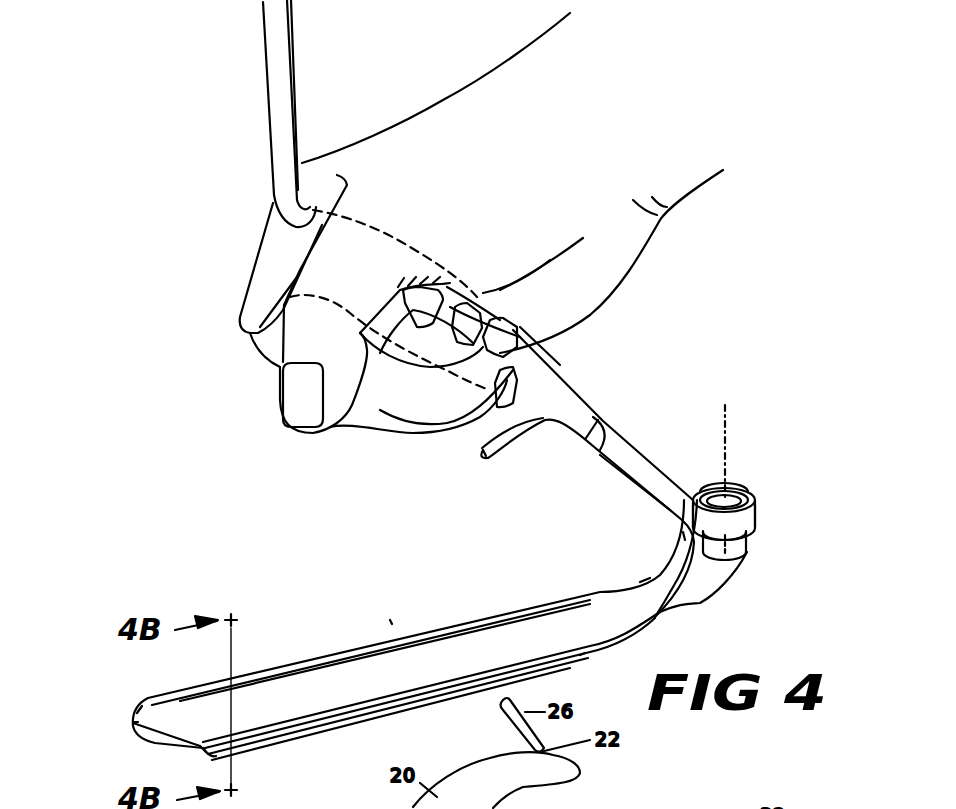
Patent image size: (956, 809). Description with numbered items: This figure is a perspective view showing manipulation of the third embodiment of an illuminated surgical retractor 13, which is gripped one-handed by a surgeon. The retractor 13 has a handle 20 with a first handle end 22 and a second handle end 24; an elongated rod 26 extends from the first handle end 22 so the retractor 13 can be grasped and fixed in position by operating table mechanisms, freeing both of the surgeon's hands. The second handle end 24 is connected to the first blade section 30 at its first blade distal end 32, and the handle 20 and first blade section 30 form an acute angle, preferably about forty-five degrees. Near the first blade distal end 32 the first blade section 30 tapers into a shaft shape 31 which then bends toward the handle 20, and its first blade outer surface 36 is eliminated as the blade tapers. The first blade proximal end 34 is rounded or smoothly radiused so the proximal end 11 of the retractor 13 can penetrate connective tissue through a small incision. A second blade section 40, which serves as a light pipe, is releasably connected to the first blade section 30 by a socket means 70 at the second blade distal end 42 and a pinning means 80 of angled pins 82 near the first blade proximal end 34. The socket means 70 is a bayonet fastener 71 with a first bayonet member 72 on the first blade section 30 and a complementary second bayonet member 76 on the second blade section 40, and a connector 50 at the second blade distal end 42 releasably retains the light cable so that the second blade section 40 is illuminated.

The proximal end of the retractor 11 is at (133, 722).
The illuminated surgical retractor 13 is at (548, 392).
The handle 20 is at (525, 360).
The first handle end 22 is at (298, 231).
The second handle end 24 is at (606, 427).
The elongated rod 26 is at (282, 52).
The first blade section 30 is at (305, 660).
The shaft shape 31 is at (650, 578).
The first blade distal end 32 is at (590, 446).
The first blade proximal end 34 is at (137, 713).
The first blade outer surface 36 is at (372, 655).
The second blade section 40 is at (580, 665).
The second blade distal end 42 is at (683, 532).
The connector 50 is at (745, 488).
The socket means 70 is at (730, 490).
The bayonet fastener 71 is at (752, 533).
The first bayonet member 72 is at (757, 512).
The second bayonet member 76 is at (745, 550).
The pinning means 80 is at (198, 754).
The angled pins 82 is at (208, 754).